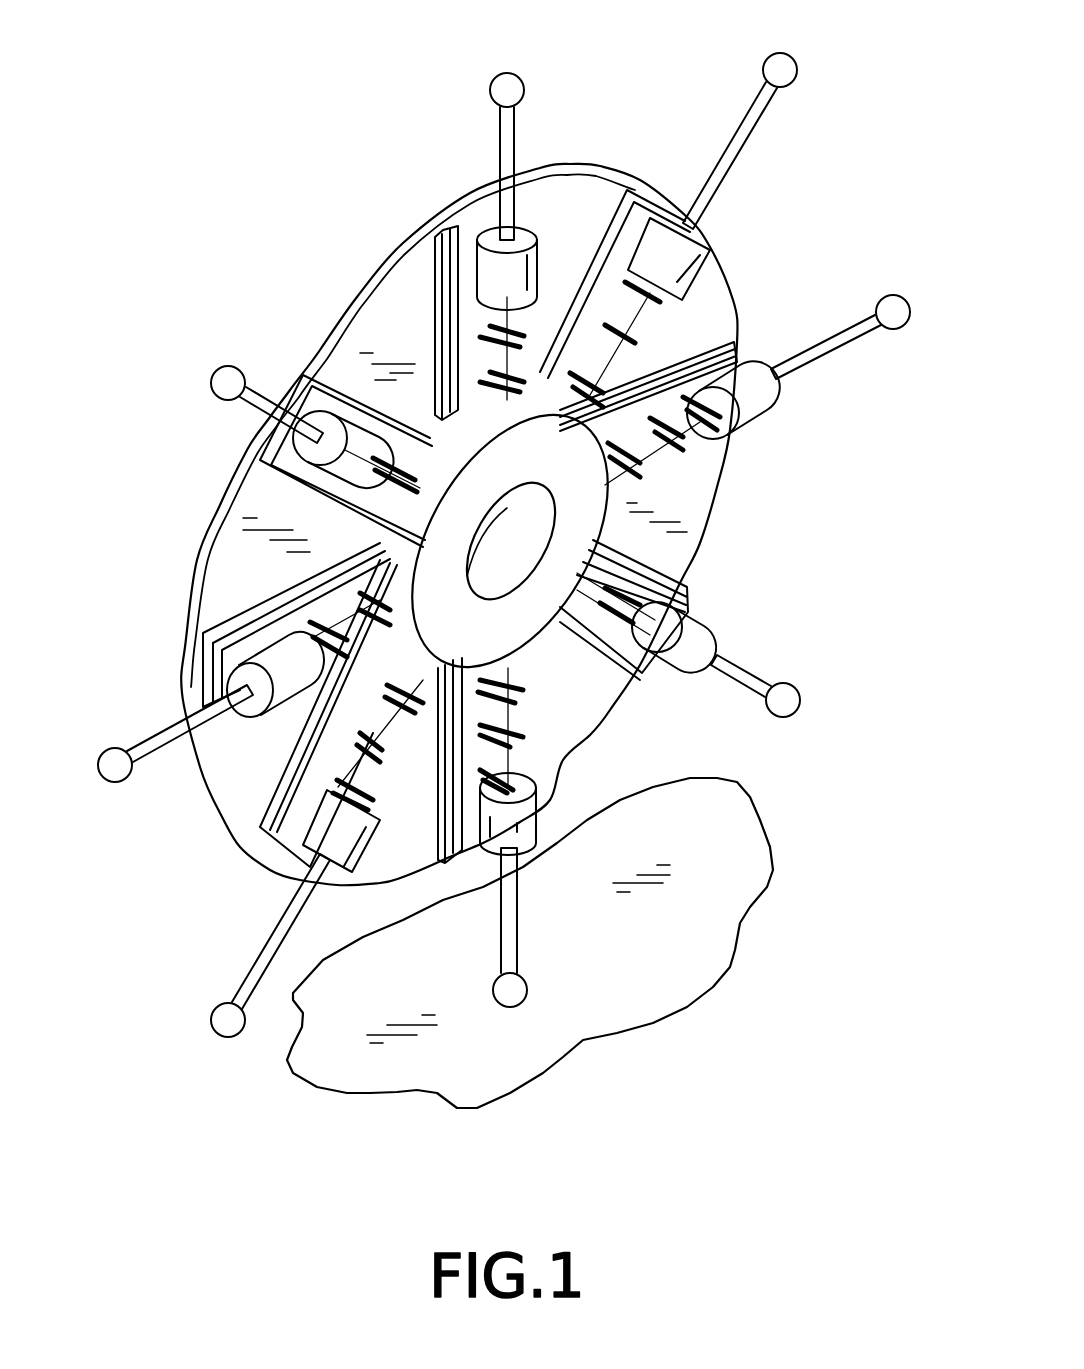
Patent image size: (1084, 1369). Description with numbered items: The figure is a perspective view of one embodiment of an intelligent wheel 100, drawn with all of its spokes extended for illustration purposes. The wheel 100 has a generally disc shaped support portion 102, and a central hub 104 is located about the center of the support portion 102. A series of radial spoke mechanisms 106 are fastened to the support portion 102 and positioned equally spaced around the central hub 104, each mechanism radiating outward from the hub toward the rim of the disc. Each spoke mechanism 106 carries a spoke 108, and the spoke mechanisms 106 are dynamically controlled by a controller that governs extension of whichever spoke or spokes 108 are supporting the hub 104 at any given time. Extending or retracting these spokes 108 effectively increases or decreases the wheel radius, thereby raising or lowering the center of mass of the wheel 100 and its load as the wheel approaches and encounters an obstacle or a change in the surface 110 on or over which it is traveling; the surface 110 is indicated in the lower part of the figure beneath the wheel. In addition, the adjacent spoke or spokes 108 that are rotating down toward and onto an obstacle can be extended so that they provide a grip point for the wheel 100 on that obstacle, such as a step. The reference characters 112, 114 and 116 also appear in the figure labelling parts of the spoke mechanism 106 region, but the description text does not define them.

The intelligent wheel 100 is at (300, 103).
The support portion 102 is at (557, 193).
The central hub 104 is at (607, 495).
The radial spoke mechanism 106 is at (537, 823).
The spoke 108 is at (223, 367).
The surface 110 is at (720, 790).
The piston cylinder 112 is at (253, 445).
The radial slot frame 114 is at (277, 473).
The rod 116 is at (773, 410).